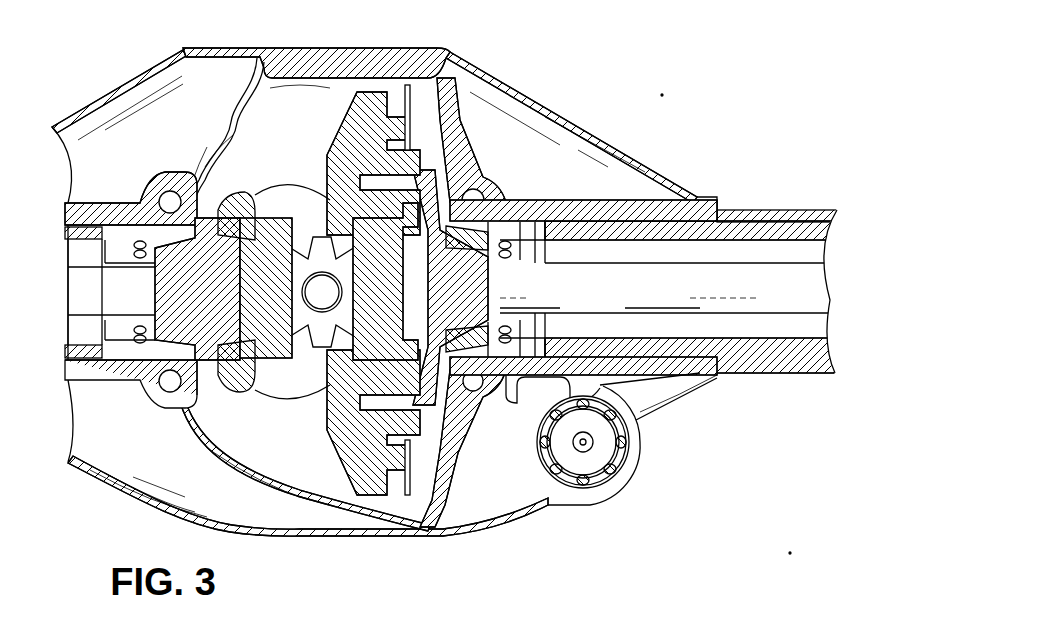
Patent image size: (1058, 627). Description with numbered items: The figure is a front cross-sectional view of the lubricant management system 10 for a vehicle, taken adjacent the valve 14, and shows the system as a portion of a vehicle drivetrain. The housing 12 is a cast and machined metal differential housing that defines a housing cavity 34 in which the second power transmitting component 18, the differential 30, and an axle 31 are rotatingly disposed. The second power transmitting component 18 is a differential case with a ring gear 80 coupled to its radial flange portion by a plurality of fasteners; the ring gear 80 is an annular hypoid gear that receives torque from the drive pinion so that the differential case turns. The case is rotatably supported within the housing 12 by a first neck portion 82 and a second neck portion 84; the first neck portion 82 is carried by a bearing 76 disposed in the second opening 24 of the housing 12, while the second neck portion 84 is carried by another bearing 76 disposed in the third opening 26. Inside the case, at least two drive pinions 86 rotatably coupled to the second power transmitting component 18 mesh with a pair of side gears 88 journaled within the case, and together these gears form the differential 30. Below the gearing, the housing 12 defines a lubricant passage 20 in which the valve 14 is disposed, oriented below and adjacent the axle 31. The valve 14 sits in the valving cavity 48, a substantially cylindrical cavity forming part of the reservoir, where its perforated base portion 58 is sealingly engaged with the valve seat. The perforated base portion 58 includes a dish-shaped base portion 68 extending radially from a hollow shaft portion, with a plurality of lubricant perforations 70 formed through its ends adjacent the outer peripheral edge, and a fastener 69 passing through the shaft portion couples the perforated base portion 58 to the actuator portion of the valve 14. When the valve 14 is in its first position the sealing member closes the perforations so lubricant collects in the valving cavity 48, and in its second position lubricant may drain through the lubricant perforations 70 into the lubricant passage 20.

The lubricant management system 10 is at (554, 90).
The housing 12 is at (413, 60).
The valve 14 is at (614, 456).
The second power transmitting component 18 is at (432, 372).
The lubricant passage 20 is at (580, 382).
The second opening 24 is at (66, 233).
The third opening 26 is at (714, 218).
The differential 30 is at (234, 182).
The axle 31 is at (782, 338).
The housing cavity 34 is at (303, 470).
The valving cavity 48 is at (545, 376).
The perforated base portion 58 is at (640, 410).
The base portion 68 is at (608, 452).
The fastener 69 is at (586, 450).
The lubricant perforations 70 is at (572, 485).
The bearing 76 is at (195, 335).
The ring gear 80 is at (386, 482).
The first neck portion 82 is at (200, 262).
The second neck portion 84 is at (487, 268).
The drive pinions 86 is at (316, 352).
The side gears 88 is at (380, 218).